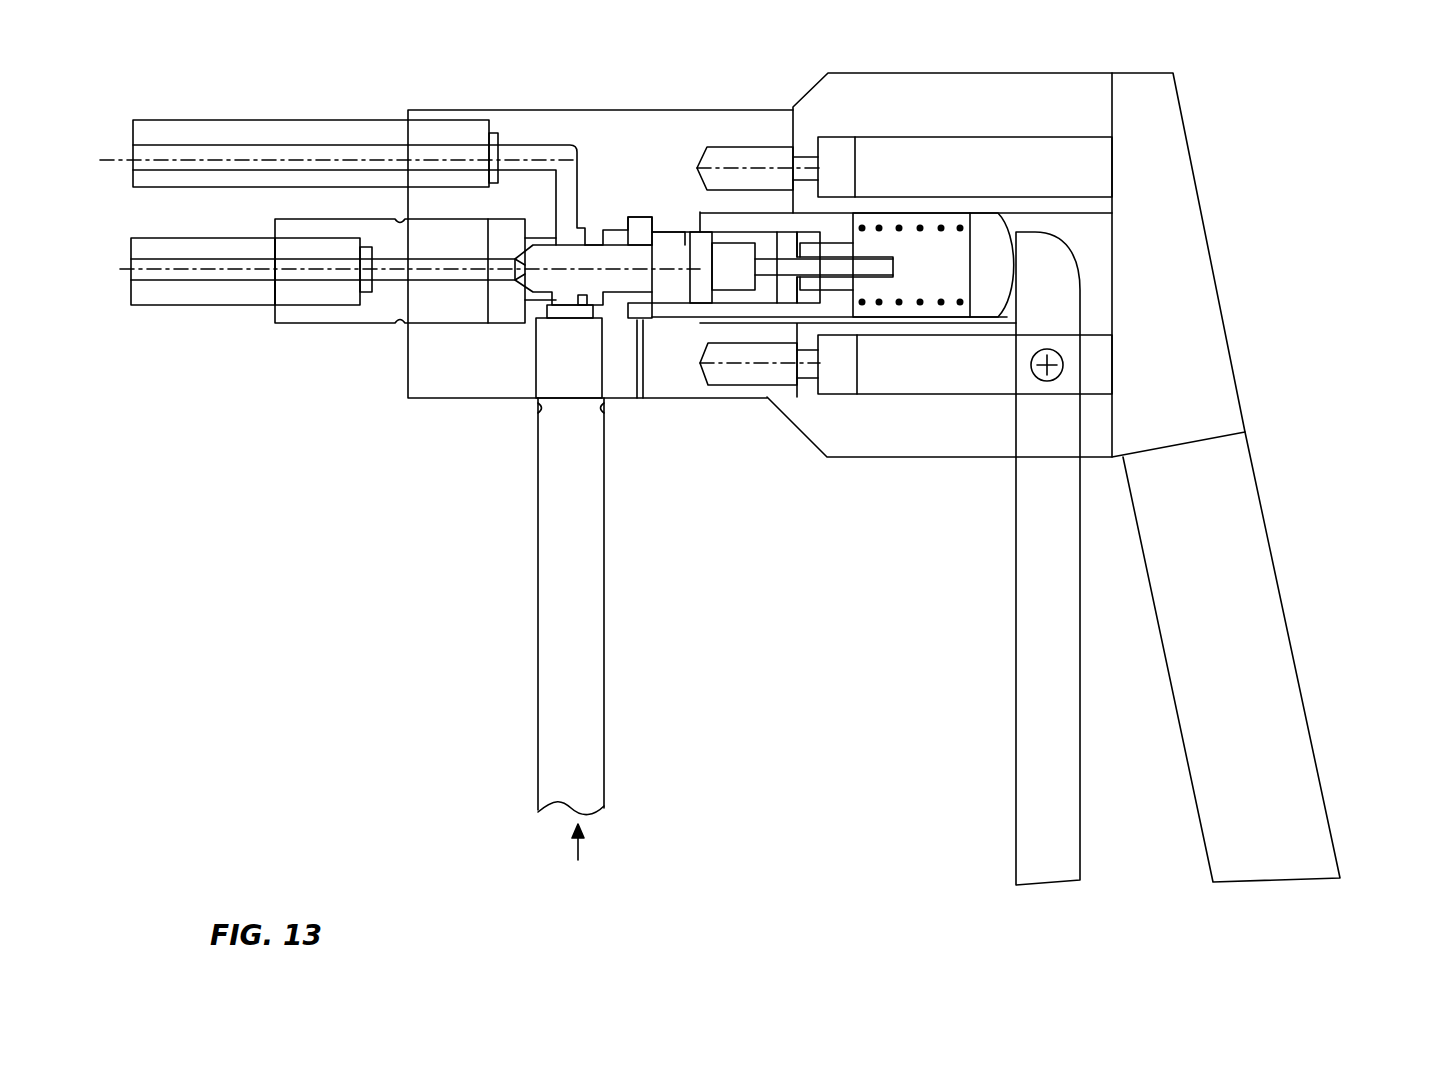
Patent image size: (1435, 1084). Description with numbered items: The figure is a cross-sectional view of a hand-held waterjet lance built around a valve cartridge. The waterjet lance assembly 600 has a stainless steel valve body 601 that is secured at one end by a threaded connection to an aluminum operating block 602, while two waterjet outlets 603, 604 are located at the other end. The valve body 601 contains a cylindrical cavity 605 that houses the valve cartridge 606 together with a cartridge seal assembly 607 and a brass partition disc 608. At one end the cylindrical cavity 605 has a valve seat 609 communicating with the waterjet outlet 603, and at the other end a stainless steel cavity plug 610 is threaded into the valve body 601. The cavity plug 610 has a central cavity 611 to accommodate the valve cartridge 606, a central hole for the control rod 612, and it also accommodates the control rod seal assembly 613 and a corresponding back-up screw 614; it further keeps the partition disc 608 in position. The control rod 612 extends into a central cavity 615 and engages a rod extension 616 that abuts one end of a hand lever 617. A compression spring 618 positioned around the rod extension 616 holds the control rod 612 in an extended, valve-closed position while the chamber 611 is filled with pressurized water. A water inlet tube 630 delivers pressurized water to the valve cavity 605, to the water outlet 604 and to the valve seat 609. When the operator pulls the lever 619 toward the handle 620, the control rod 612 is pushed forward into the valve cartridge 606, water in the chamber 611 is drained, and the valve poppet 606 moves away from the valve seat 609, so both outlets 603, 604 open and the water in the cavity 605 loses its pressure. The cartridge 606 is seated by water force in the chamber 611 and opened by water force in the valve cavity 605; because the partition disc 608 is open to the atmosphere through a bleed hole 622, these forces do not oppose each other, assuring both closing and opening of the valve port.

The waterjet lance assembly 600 is at (1290, 282).
The valve body 601 is at (425, 375).
The operating block 602 is at (835, 435).
The waterjet outlet 603 is at (445, 310).
The waterjet outlet 604 is at (445, 135).
The cylindrical cavity 605 is at (593, 237).
The valve cartridge 606 is at (672, 280).
The cartridge seal assembly 607 is at (615, 303).
The partition disc 608 is at (640, 222).
The valve seat 609 is at (503, 322).
The cavity plug 610 is at (672, 308).
The central cavity 611 is at (768, 290).
The control rod 612 is at (880, 263).
The control rod seal assembly 613 is at (805, 243).
The back-up screw 614 is at (827, 240).
The central cavity 615 is at (1042, 222).
The rod extension 616 is at (945, 258).
The hand lever 617 is at (1045, 278).
The compression spring 618 is at (937, 310).
The lever 619 is at (1040, 742).
The handle 620 is at (1255, 648).
The bleed hole 622 is at (638, 397).
The water inlet tube 630 is at (565, 628).